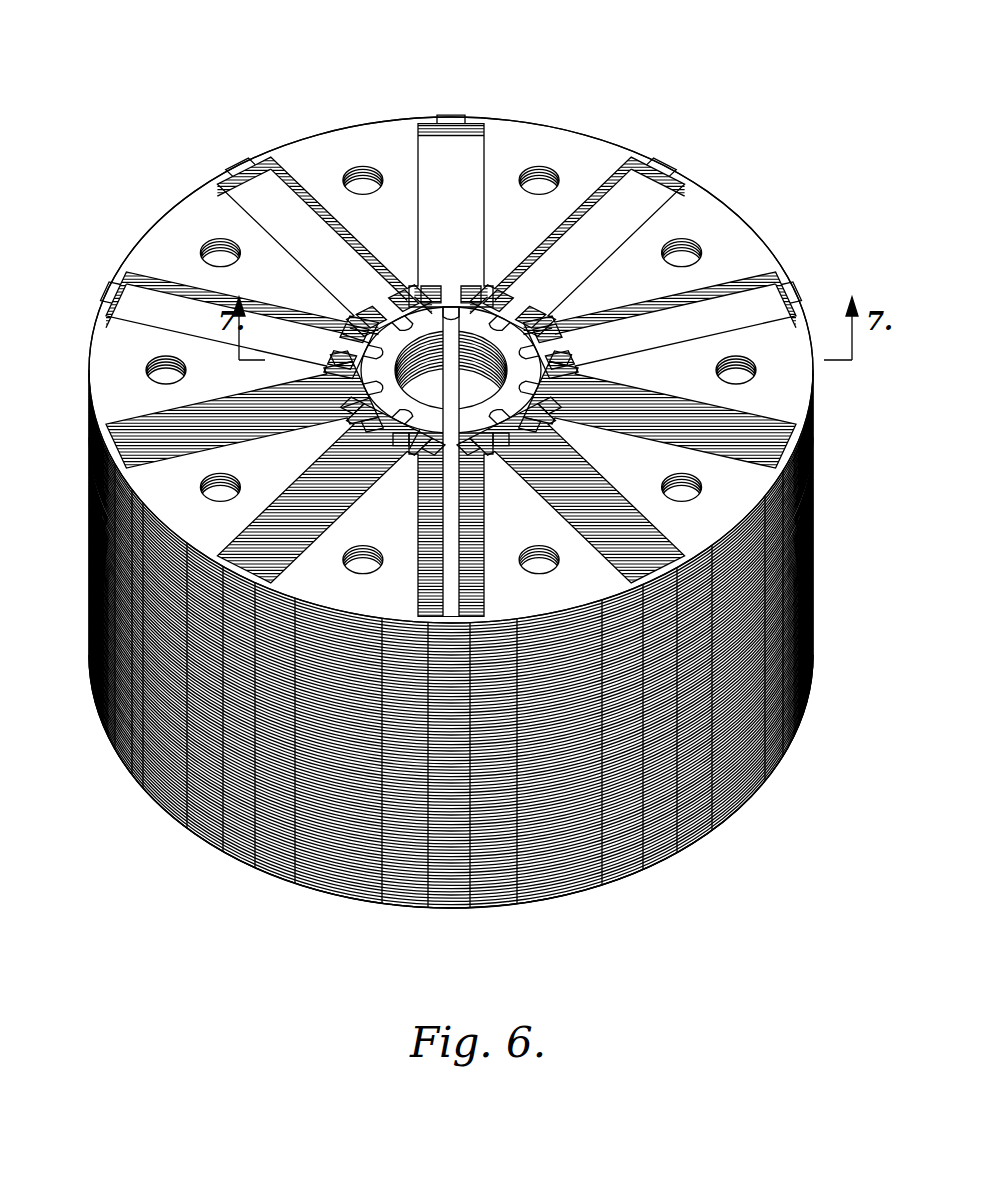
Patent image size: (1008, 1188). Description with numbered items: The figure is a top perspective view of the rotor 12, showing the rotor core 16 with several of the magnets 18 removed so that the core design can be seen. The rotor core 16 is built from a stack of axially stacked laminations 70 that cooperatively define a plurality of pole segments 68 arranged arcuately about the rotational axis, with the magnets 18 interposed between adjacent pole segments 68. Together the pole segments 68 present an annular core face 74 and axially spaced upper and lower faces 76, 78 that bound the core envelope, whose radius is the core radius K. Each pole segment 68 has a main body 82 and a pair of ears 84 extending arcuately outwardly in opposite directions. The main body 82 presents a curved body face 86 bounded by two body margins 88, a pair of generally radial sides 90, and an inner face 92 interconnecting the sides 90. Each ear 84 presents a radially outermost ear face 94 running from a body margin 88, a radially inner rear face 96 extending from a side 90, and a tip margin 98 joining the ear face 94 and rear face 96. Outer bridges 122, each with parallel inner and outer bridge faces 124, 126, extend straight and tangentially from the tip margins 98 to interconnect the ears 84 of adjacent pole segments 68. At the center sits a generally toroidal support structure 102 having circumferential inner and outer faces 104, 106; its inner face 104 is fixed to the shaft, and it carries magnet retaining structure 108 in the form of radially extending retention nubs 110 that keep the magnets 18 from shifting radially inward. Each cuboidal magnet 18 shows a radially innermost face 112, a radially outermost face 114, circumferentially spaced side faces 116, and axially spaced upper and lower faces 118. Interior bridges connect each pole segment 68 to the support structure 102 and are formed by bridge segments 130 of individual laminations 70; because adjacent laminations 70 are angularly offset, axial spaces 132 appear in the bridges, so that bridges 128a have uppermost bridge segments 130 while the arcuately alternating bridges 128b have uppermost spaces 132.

The rotor 12 is at (451, 454).
The rotor core 16 is at (435, 154).
The magnets 18 is at (440, 234).
The pole segments 68 is at (451, 422).
The laminations 70 is at (451, 672).
The core face 74 is at (451, 640).
The upper face 76 is at (777, 613).
The lower face 78 is at (451, 827).
The main body 82 is at (140, 645).
The ears 84 is at (352, 744).
The body face 86 is at (577, 745).
The body margins 88 is at (524, 751).
The sides 90 is at (242, 415).
The inner face 92 is at (387, 414).
The ear face 94 is at (529, 726).
The rear face 96 is at (633, 472).
The tip margin 98 is at (365, 636).
The support structure 102 is at (512, 367).
The inner face 104 is at (493, 355).
The outer face 106 is at (466, 471).
The magnet retaining structure 108 is at (577, 246).
The retention nubs 110 is at (447, 326).
The radially innermost face 112 is at (451, 276).
The radially outermost face 114 is at (619, 182).
The side faces 116 is at (451, 356).
The upper and lower faces 118 is at (451, 195).
The outer bridges 122 is at (315, 530).
The inner bridge face 124 is at (327, 462).
The outer bridge face 126 is at (361, 710).
The interior bridges 128a is at (381, 432).
The interior bridges 128b is at (392, 399).
The bridge segments 130 is at (451, 404).
The axial spaces 132 is at (317, 358).
The core radius K is at (451, 370).